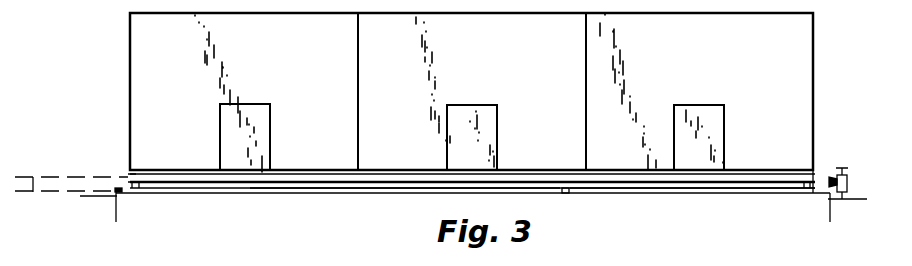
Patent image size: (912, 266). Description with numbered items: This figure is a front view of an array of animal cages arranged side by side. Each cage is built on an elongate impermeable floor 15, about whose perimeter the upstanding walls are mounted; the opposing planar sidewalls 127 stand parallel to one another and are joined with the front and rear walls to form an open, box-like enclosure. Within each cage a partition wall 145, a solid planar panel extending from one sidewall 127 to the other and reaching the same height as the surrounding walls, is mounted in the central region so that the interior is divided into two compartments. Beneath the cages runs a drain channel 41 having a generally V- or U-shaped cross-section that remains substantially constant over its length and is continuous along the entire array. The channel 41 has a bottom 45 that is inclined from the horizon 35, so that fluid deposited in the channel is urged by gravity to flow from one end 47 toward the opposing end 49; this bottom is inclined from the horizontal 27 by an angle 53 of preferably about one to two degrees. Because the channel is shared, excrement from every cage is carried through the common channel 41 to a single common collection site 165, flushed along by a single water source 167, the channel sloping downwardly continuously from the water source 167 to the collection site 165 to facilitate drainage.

The sidewall 127 is at (132, 88).
The partition wall 145 is at (212, 77).
The floor 15 is at (163, 168).
The horizontal 27 is at (53, 177).
The opposing end 49 is at (128, 177).
The angle 53 is at (33, 192).
The collection site 165 is at (123, 195).
The drain channel 41 is at (248, 192).
The bottom 45 is at (340, 192).
The horizon 35 is at (713, 195).
The end 47 is at (817, 178).
The water source 167 is at (848, 183).